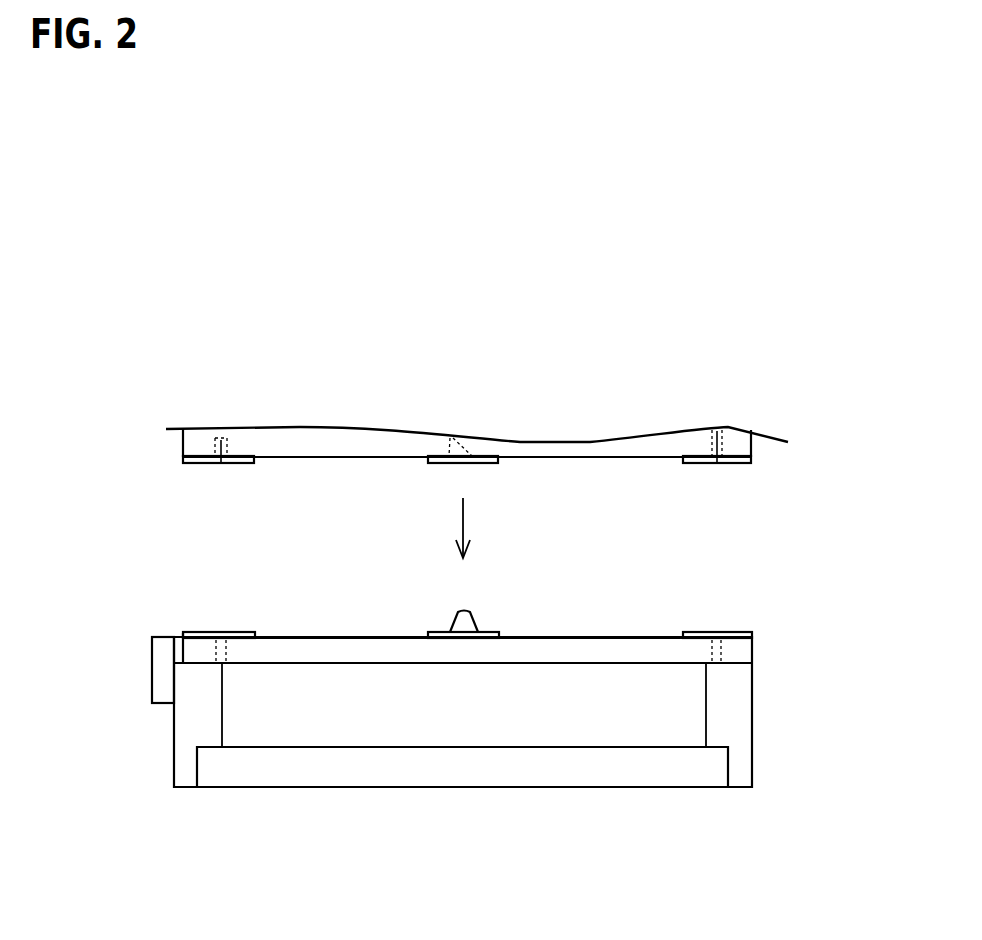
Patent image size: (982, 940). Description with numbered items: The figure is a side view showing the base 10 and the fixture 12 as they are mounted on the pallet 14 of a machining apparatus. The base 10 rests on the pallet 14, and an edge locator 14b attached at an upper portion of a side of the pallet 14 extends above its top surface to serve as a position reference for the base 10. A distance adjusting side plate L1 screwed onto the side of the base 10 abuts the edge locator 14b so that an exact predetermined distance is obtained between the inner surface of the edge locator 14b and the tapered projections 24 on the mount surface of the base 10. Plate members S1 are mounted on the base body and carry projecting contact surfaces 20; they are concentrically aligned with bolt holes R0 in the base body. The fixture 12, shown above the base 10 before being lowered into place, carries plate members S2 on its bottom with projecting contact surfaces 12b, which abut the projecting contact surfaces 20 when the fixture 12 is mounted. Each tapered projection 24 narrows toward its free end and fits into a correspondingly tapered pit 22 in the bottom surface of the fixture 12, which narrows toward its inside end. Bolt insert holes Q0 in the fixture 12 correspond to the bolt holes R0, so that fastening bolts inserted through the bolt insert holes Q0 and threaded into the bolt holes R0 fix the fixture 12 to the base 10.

The base 10 is at (625, 637).
The fixture 12 is at (592, 440).
The projecting contact surfaces 12b is at (220, 463).
The pallet 14 is at (754, 727).
The edge locator 14b is at (150, 680).
The projecting contact surfaces 20 is at (236, 632).
The tapered pit 22 is at (450, 440).
The tapered projection 24 is at (471, 616).
The bolt insert hole Q0 is at (224, 438).
The bolt hole R0 is at (213, 645).
The plate member S1 is at (254, 632).
The plate member S2 is at (203, 464).
The distance adjusting side plate L1 is at (181, 645).